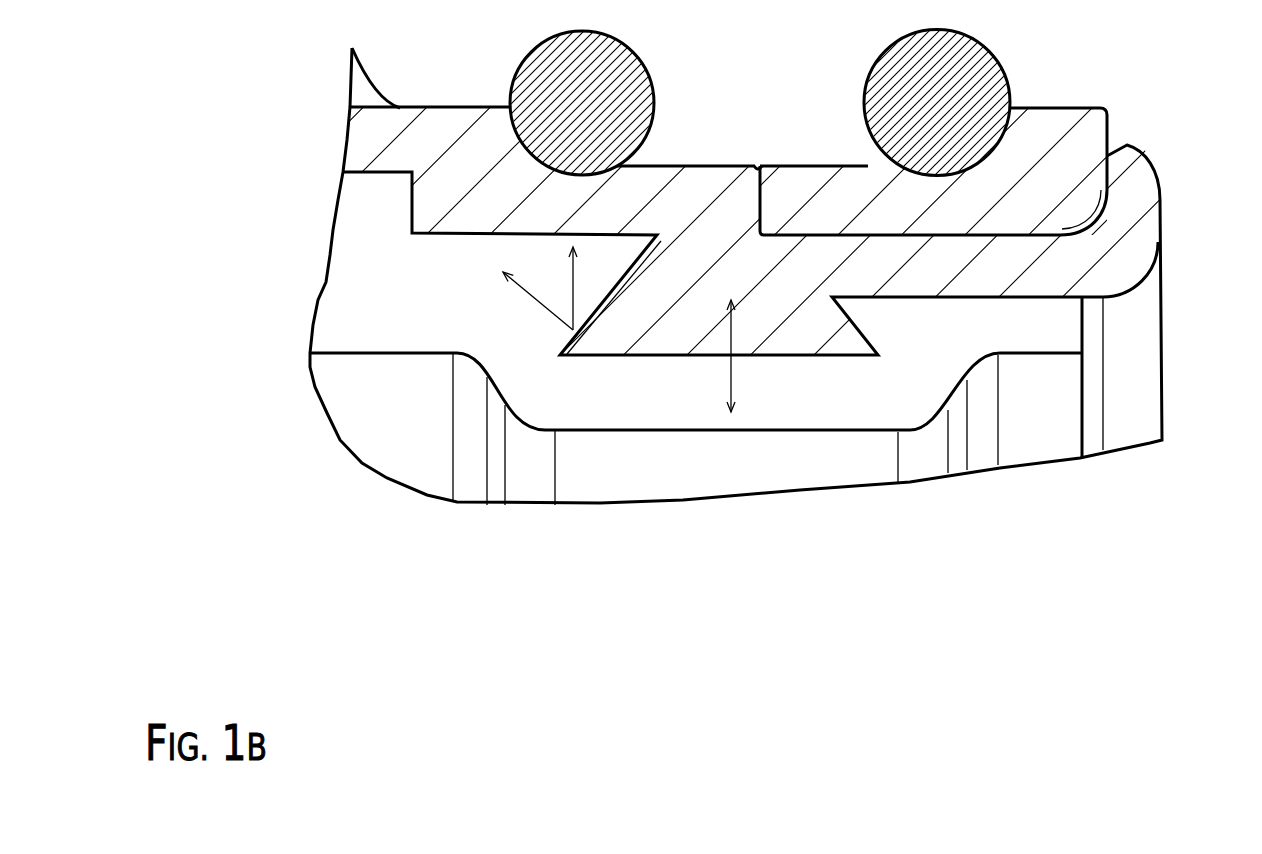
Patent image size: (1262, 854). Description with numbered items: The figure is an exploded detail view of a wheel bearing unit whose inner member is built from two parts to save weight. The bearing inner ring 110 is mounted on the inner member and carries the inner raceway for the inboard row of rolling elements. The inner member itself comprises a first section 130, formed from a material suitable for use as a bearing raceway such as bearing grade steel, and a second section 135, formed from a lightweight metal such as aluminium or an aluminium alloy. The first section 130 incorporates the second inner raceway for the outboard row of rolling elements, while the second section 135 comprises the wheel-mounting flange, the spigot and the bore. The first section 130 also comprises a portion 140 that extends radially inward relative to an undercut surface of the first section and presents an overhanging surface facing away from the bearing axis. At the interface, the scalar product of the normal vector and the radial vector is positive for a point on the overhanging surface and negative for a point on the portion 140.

The bearing inner ring 110 is at (1058, 150).
The first section 130 is at (402, 155).
The second section 135 is at (358, 278).
The portion 140 is at (643, 312).